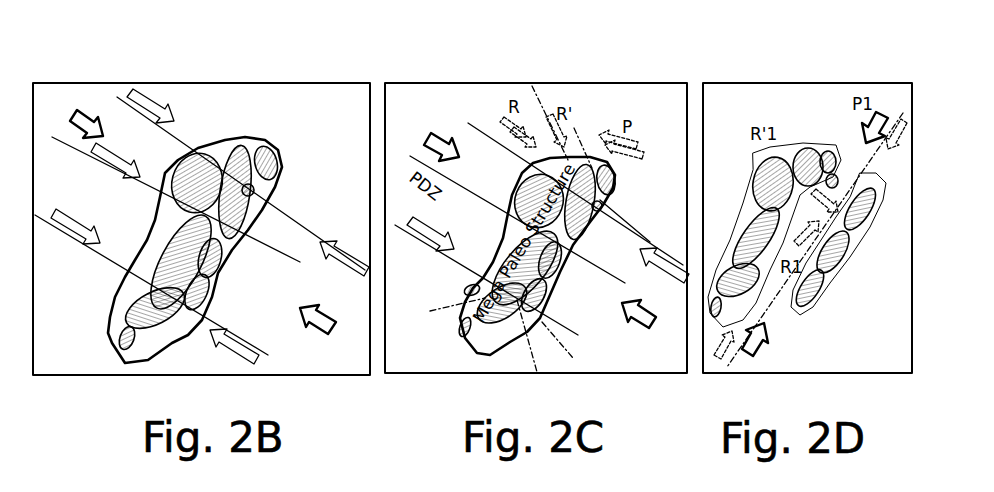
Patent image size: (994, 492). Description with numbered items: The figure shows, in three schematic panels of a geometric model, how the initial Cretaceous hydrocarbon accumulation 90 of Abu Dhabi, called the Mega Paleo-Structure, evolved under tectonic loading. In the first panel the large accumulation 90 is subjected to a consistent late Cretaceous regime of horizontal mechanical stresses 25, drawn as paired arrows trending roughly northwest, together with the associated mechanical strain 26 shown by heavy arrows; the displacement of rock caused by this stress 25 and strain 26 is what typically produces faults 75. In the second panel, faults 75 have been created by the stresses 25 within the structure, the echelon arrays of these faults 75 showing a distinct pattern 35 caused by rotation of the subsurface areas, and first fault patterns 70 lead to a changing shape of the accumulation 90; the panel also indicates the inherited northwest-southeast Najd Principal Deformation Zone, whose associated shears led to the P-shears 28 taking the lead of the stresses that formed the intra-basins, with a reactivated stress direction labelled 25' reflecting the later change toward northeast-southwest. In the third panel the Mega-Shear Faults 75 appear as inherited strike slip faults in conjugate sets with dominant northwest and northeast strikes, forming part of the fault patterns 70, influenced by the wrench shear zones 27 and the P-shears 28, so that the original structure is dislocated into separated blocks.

In FIG. 2B, the mechanical stresses 25 is at (210, 221).
In FIG. 2B, the mechanical strain 26 is at (84, 108).
In FIG. 2B, the hydrocarbon accumulation 90 is at (122, 320).
In FIG. 2D, the hydrocarbon accumulation 90 is at (800, 148).
In FIG. 2C, the faults 75 is at (623, 132).
In FIG. 2C, the pattern 35 is at (530, 80).
In FIG. 2C, the fault patterns 70 is at (660, 100).
In FIG. 2C, the reactivated shear strand 25' is at (637, 307).
In FIG. 2D, the P-shears 28 is at (903, 112).
In FIG. 2D, the wrench shear zones 27 is at (848, 165).